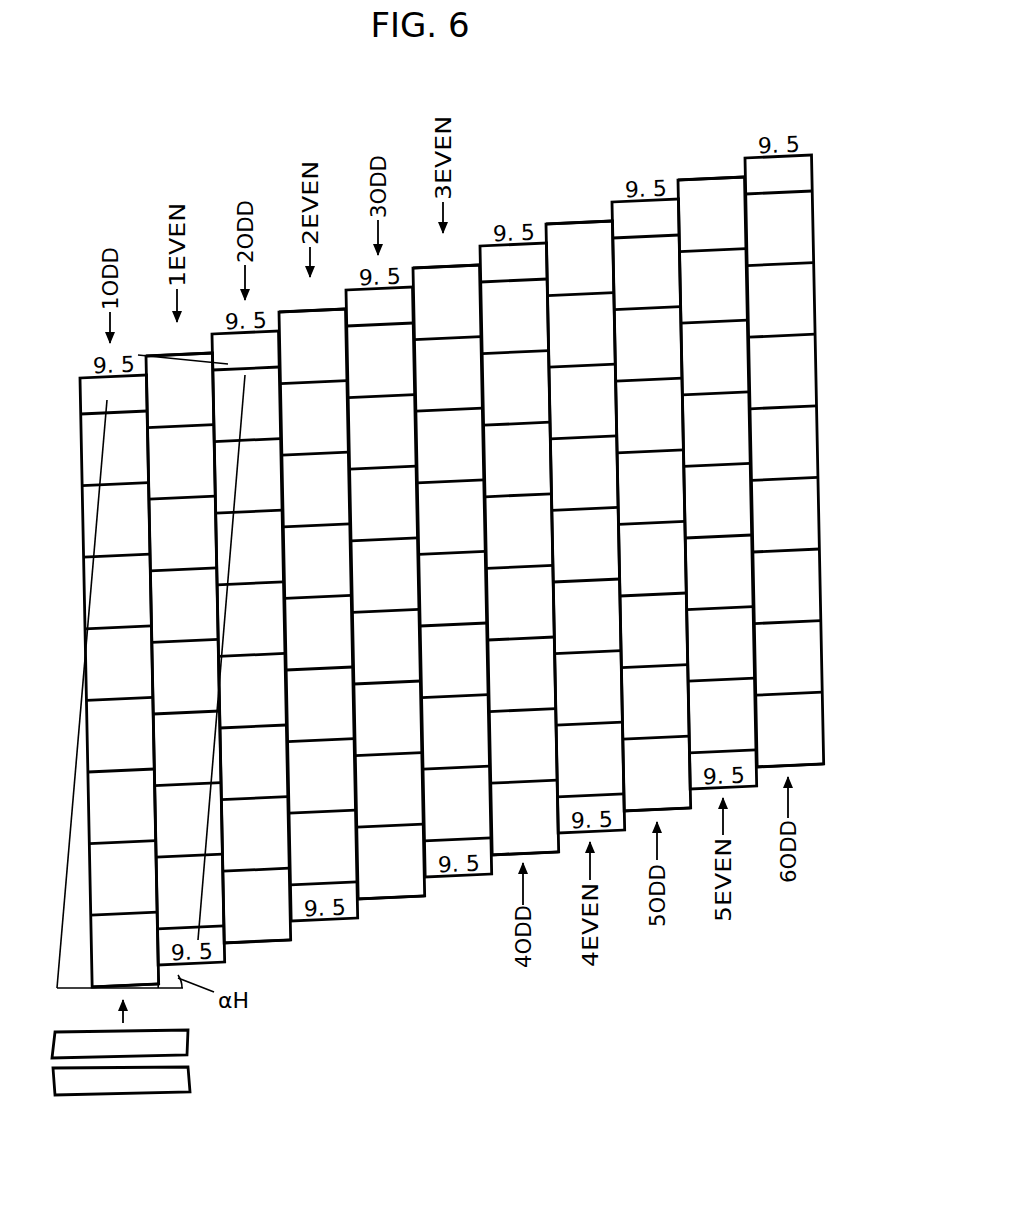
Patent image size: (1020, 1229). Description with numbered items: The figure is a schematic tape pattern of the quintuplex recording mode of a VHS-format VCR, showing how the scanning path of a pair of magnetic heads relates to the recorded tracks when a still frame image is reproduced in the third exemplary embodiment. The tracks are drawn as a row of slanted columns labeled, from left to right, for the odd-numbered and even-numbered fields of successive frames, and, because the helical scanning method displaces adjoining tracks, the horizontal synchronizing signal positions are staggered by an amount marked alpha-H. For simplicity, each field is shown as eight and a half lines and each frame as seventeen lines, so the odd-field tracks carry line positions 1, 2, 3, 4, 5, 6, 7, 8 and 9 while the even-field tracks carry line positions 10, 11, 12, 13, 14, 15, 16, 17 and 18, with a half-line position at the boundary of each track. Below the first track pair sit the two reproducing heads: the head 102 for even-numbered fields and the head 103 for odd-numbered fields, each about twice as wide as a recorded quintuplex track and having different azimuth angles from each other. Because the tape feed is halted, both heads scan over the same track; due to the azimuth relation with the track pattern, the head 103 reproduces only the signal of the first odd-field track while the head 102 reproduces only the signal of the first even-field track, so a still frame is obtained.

The head for even-numbered fields 102 is at (190, 1036).
The head for odd-numbered fields 103 is at (190, 1082).
The grid position 1 is at (458, 864).
The grid position 2 is at (456, 792).
The grid position 3 is at (455, 721).
The grid position 4 is at (453, 649).
The grid position 5 is at (452, 577).
The grid position 6 is at (451, 506).
The grid position 7 is at (449, 434).
The grid position 8 is at (448, 363).
The grid position 9 is at (446, 291).
The grid position 10 is at (456, 828).
The grid position 11 is at (455, 756).
The grid position 12 is at (453, 685).
The grid position 13 is at (452, 613).
The grid position 14 is at (450, 541).
The grid position 15 is at (449, 470).
The grid position 16 is at (447, 398).
The grid position 17 is at (446, 327).
The grid position 18 is at (445, 255).